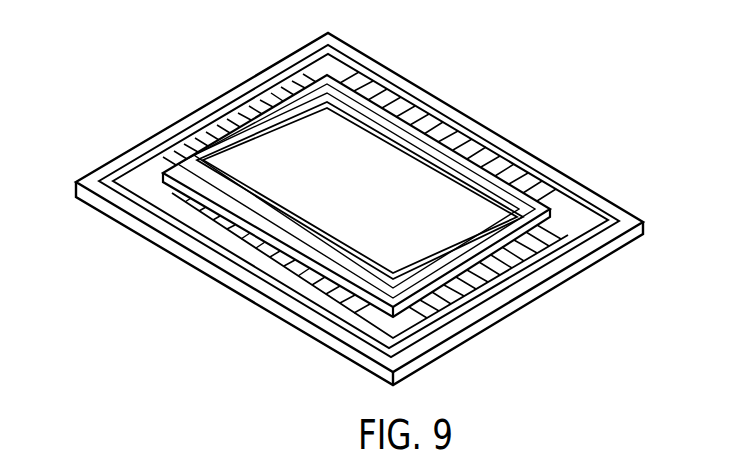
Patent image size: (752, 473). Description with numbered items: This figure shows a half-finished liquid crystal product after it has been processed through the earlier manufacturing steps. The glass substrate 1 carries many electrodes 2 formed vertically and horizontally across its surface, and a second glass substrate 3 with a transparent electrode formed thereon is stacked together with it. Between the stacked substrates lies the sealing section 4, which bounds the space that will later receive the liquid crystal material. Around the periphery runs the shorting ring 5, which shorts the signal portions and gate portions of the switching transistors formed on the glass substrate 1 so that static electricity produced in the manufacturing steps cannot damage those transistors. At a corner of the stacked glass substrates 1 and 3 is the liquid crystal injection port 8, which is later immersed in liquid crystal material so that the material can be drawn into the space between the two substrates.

The glass substrate 1 is at (178, 118).
The electrodes 2 is at (253, 77).
The glass substrate 3 is at (504, 287).
The sealing section 4 is at (470, 135).
The shorting ring 5 is at (538, 163).
The liquid crystal injection port 8 is at (193, 182).